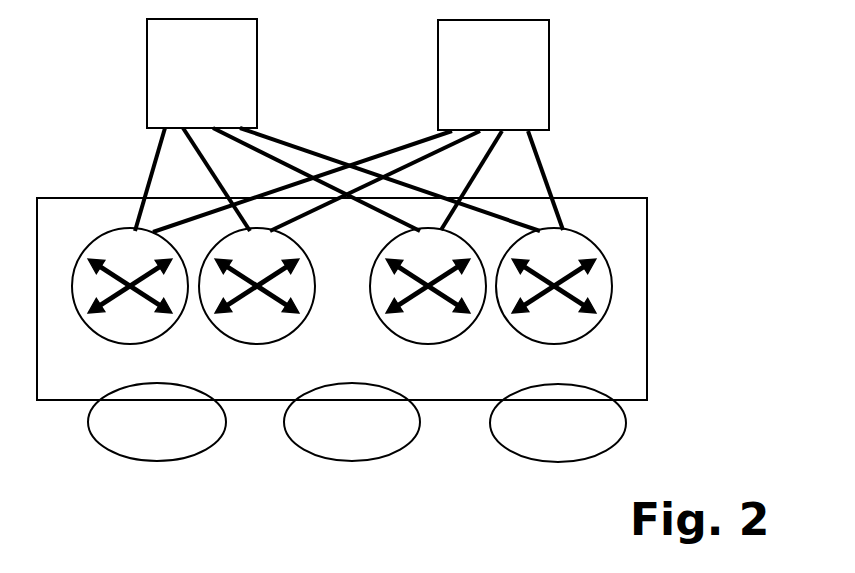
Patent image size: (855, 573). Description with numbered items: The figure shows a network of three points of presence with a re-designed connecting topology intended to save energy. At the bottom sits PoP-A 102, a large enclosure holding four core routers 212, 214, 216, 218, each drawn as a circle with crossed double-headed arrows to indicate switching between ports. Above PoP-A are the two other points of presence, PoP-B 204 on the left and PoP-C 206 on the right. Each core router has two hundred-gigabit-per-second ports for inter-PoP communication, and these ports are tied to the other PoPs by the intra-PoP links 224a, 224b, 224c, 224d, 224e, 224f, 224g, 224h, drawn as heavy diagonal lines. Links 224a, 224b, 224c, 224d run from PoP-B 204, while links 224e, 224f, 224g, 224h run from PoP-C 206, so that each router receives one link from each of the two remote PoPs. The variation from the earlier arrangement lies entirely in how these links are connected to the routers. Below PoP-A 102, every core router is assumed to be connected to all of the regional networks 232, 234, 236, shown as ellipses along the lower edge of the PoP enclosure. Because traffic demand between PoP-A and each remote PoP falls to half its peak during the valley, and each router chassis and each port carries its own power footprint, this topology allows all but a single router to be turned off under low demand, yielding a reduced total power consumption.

The PoP-A 102 is at (95, 228).
The PoP-B 204 is at (182, 93).
The PoP-C 206 is at (473, 93).
The core router 212 is at (112, 335).
The core router 214 is at (239, 335).
The core router 216 is at (410, 335).
The core router 218 is at (536, 335).
The intra-PoP link 224a is at (153, 164).
The intra-PoP link 224b is at (204, 160).
The intra-PoP link 224c is at (270, 172).
The intra-PoP link 224d is at (268, 128).
The intra-PoP link 224e is at (435, 133).
The intra-PoP link 224f is at (455, 148).
The intra-PoP link 224g is at (497, 152).
The intra-PoP link 224h is at (536, 152).
The regional network 232 is at (139, 446).
The regional network 234 is at (334, 446).
The regional network 236 is at (540, 446).